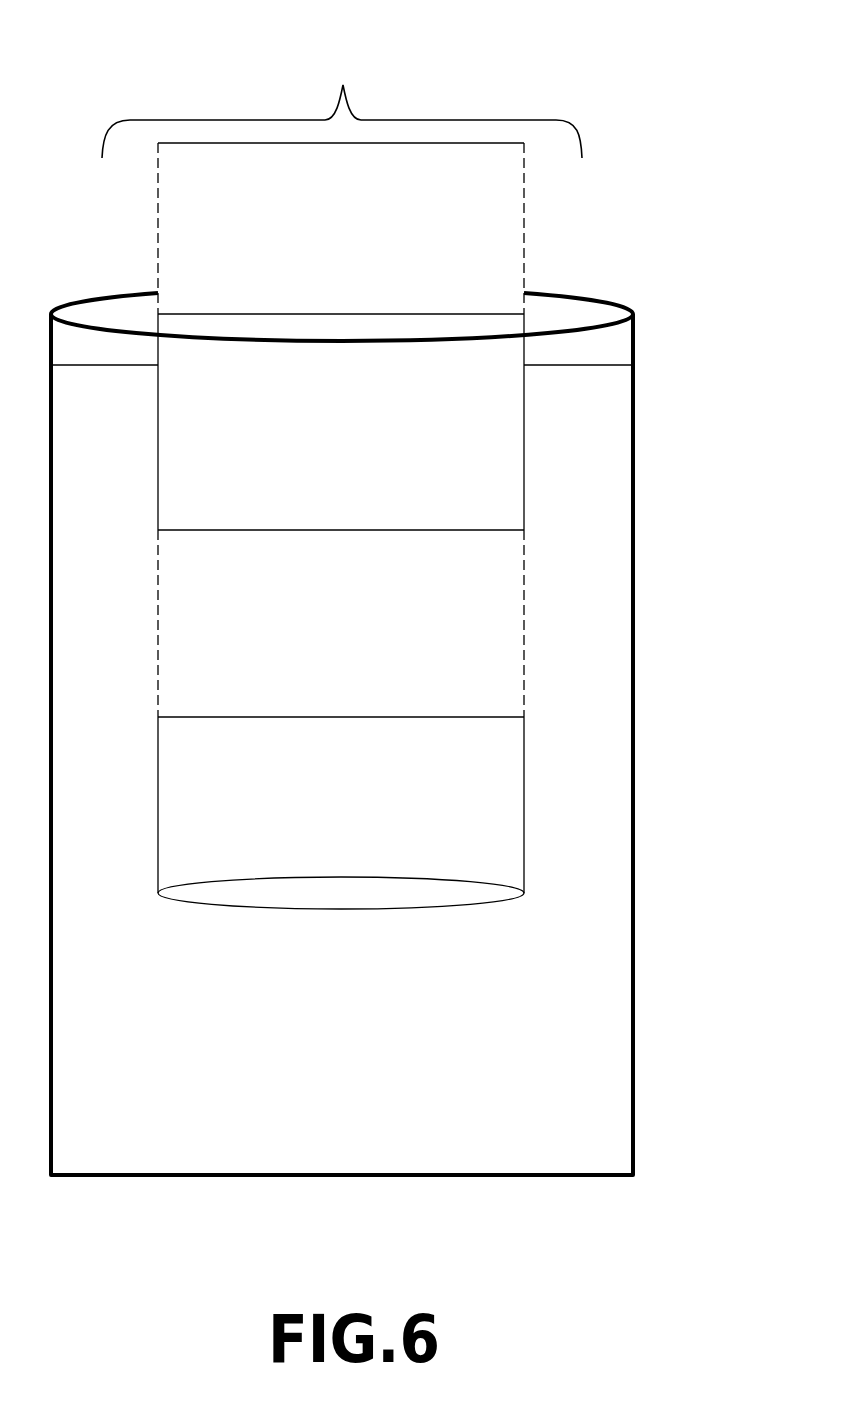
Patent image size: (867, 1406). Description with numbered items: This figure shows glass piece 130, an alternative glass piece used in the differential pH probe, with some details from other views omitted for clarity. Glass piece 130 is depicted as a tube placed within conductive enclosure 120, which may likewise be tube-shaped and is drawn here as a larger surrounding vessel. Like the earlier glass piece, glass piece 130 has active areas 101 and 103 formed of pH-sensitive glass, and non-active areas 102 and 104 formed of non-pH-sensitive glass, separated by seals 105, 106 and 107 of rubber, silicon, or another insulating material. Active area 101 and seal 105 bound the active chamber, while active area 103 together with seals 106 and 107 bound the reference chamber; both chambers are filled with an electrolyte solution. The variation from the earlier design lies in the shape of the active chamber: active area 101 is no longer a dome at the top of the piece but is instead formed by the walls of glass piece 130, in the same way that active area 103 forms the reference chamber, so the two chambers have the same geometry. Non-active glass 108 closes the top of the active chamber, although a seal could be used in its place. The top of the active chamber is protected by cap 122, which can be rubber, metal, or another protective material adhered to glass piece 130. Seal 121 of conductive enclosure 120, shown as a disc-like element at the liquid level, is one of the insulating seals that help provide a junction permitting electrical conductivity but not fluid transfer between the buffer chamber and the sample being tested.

The active area 101 is at (160, 205).
The non-active area 102 is at (158, 432).
The active area 103 is at (524, 600).
The non-active area 104 is at (158, 795).
The seal 105 is at (478, 313).
The seal 106 is at (320, 530).
The seal 107 is at (312, 717).
The non-active glass 108 is at (293, 143).
The conductive enclosure 120 is at (635, 529).
The seal 121 is at (73, 367).
The cap 122 is at (343, 85).
The glass piece 130 is at (588, 100).